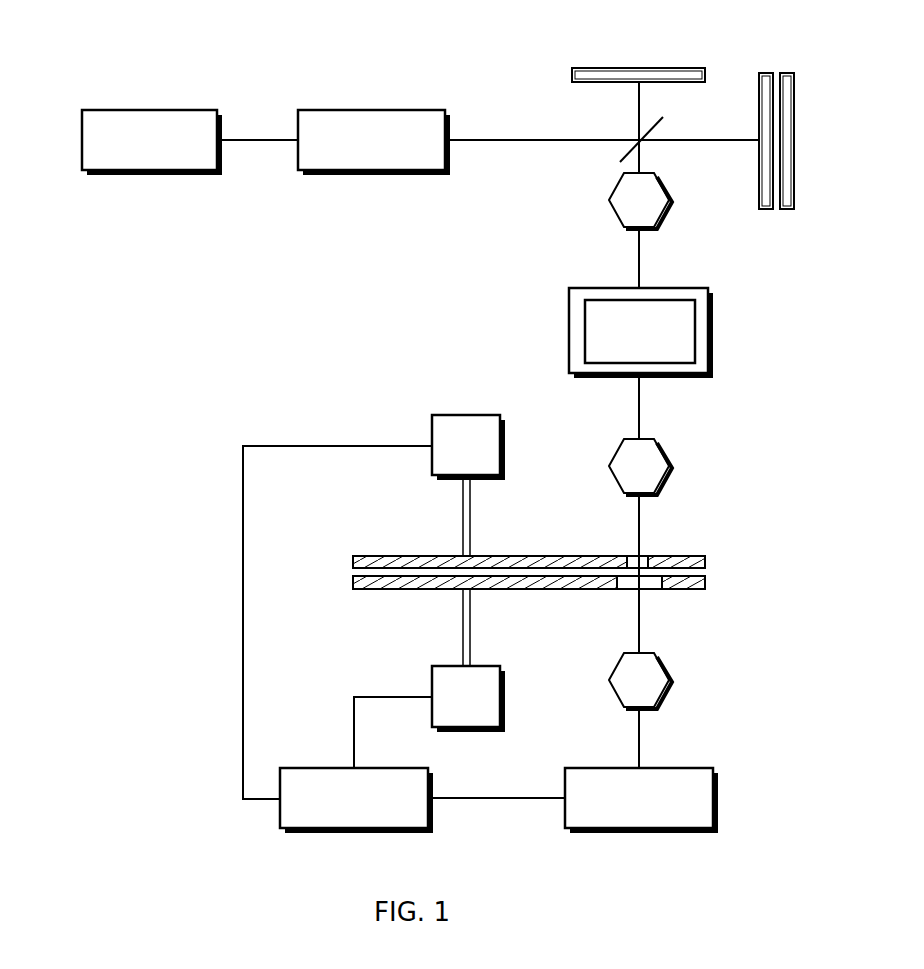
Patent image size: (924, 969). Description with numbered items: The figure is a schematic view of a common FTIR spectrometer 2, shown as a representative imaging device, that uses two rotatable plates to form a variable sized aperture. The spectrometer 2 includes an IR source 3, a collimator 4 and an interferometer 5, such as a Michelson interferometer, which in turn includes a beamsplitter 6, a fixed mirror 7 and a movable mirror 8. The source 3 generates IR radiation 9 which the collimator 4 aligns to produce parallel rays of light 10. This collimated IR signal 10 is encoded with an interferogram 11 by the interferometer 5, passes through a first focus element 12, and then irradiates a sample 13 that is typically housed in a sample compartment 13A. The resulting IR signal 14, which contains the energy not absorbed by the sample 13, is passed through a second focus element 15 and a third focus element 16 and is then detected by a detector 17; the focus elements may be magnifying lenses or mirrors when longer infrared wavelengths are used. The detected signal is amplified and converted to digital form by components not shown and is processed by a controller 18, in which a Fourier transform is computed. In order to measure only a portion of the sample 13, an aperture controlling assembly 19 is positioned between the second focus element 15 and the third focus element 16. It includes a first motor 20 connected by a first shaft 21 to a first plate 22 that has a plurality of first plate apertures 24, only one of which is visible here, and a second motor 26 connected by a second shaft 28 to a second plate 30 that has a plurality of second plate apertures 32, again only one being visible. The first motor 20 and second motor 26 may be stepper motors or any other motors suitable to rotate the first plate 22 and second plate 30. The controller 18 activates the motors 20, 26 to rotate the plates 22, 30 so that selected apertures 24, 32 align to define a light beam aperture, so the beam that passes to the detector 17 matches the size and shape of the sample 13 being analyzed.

The FTIR spectrometer 2 is at (802, 34).
The IR source 3 is at (128, 110).
The collimator 4 is at (360, 110).
The interferometer 5 is at (718, 92).
The beamsplitter 6 is at (628, 160).
The fixed mirror 7 is at (580, 68).
The movable mirror 8 is at (824, 185).
The IR radiation 9 is at (272, 140).
The parallel rays of light 10 is at (522, 140).
The interferogram 11 is at (642, 148).
The first focus element 12 is at (640, 201).
The sample 13 is at (695, 320).
The sample compartment 13A is at (712, 350).
The IR signal 14 is at (640, 400).
The second focus element 15 is at (640, 467).
The third focus element 16 is at (640, 681).
The detector 17 is at (718, 785).
The controller 18 is at (433, 815).
The aperture controlling assembly 19 is at (414, 410).
The first motor 20 is at (468, 447).
The first shaft 21 is at (470, 548).
The first plate 22 is at (555, 556).
The first plate aperture 24 is at (643, 556).
The second motor 26 is at (468, 699).
The second shaft 28 is at (470, 594).
The second plate 30 is at (558, 589).
The second plate aperture 32 is at (650, 591).